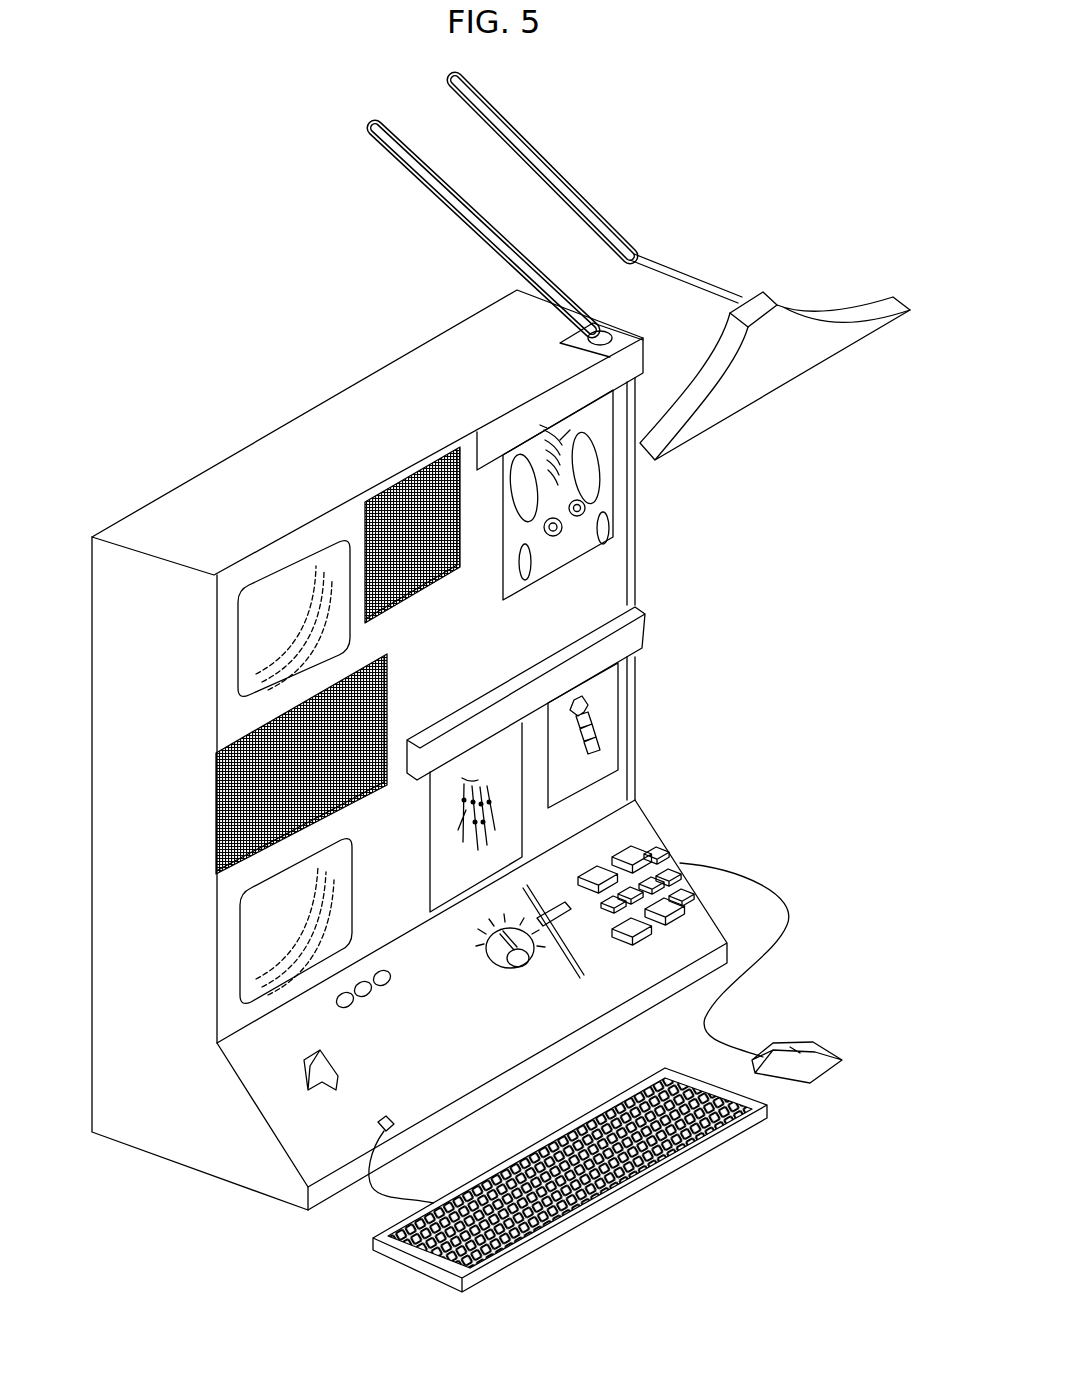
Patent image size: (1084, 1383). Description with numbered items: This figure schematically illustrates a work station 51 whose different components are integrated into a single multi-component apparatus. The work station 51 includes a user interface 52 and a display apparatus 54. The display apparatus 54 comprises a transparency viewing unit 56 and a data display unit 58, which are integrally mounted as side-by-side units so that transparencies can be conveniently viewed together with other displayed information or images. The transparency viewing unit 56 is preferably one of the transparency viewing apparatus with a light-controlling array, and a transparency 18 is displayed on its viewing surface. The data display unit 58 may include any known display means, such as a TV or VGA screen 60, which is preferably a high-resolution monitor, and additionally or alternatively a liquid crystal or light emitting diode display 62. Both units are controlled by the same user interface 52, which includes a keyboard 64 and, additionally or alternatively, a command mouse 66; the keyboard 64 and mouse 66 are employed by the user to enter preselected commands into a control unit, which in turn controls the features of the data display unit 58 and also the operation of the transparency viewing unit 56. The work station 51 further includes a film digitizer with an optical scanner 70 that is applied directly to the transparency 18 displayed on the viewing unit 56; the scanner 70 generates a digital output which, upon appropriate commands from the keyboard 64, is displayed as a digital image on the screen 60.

The work station 51 is at (217, 1187).
The display apparatus 54 is at (215, 508).
The transparency viewing unit 56 is at (633, 567).
The data display unit 58 is at (236, 640).
The screen 60 is at (252, 952).
The liquid crystal or light emitting diode display 62 is at (216, 816).
The transparency 18 is at (573, 492).
The user interface 52 is at (628, 820).
The keyboard 64 is at (683, 1170).
The mouse 66 is at (810, 1057).
The optical scanner 70 is at (807, 353).